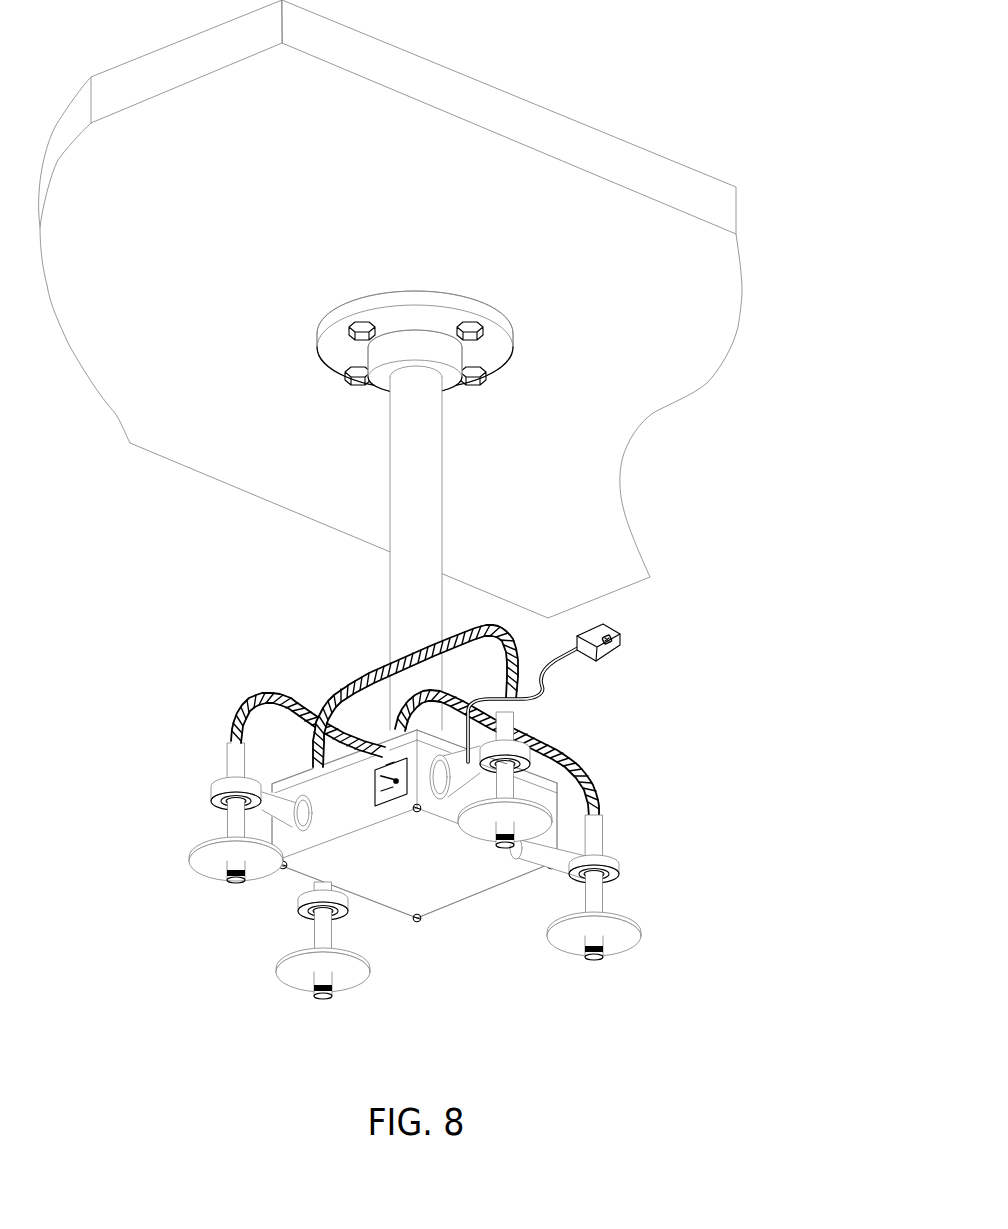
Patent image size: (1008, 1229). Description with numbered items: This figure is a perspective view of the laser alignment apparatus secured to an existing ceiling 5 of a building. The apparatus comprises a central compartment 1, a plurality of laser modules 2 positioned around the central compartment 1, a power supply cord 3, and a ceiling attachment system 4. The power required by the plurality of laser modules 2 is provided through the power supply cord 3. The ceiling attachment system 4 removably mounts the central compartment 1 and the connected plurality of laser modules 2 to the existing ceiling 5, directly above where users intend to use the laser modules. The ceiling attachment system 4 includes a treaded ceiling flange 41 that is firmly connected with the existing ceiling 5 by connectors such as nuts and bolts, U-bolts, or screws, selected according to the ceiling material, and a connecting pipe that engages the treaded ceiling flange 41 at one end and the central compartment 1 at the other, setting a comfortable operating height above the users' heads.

The central compartment 1 is at (430, 910).
The plurality of laser modules 2 is at (524, 794).
The power supply cord 3 is at (617, 638).
The ceiling attachment system 4 is at (383, 483).
The treaded ceiling flange 41 is at (372, 305).
The existing ceiling 5 is at (532, 120).